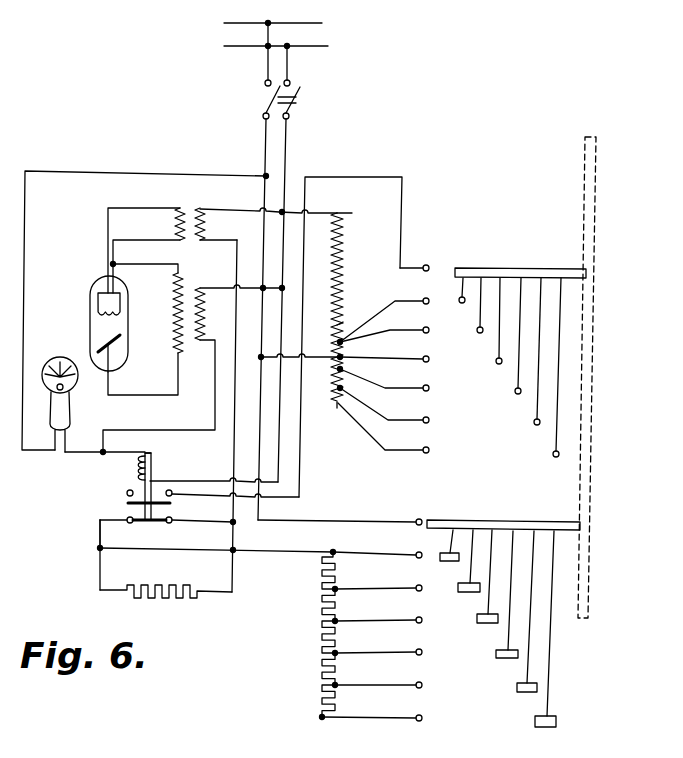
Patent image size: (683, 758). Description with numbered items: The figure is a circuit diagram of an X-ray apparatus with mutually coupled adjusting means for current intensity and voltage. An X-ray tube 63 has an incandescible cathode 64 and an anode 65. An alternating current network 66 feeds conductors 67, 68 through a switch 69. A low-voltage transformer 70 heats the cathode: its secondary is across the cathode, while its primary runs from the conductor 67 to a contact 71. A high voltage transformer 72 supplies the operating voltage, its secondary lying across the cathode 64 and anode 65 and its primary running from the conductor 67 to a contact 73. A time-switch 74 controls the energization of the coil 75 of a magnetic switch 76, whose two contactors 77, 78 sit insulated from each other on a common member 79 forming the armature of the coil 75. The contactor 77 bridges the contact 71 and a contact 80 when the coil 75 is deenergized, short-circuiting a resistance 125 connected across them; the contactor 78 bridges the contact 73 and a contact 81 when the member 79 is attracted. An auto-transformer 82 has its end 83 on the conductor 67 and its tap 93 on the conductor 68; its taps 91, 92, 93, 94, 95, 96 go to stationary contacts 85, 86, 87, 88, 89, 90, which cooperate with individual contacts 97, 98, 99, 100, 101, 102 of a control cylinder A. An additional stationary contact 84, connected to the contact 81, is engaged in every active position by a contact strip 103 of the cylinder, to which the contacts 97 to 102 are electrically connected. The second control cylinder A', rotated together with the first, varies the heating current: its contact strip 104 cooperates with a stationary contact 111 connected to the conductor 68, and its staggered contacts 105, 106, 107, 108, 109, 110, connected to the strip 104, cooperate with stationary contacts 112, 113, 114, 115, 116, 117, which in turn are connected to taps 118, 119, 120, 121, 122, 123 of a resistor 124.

The X-ray tube 63 is at (90, 322).
The incandescible cathode 64 is at (105, 312).
The anode 65 is at (99, 342).
The alternating current network 66 is at (280, 34).
The conductor 67 is at (286, 135).
The conductor 68 is at (266, 137).
The switch 69 is at (297, 100).
The low-voltage transformer 70 is at (190, 222).
The contact 71 is at (172, 522).
The high voltage transformer 72 is at (177, 346).
The contact 73 is at (128, 503).
The time-switch 74 is at (58, 412).
The coil 75 is at (152, 472).
The magnetic switch 76 is at (127, 492).
The contactor 77 is at (150, 522).
The contactor 78 is at (127, 520).
The common member 79 is at (148, 456).
The contact 80 is at (102, 524).
The contact 81 is at (172, 495).
The auto-transformer 82 is at (343, 306).
The end of auto-transformer 83 is at (358, 213).
The stationary contact 84 is at (425, 266).
The stationary contact 85 is at (384, 311).
The stationary contact 86 is at (384, 325).
The stationary contact 87 is at (384, 350).
The stationary contact 88 is at (384, 379).
The stationary contact 89 is at (384, 405).
The stationary contact 90 is at (383, 428).
The tap 91 is at (343, 327).
The tap 92 is at (345, 342).
The tap 93 is at (345, 357).
The tap 94 is at (345, 368).
The tap 95 is at (343, 386).
The tap 96 is at (337, 405).
The contact of cylinder A 97 is at (460, 298).
The contact of cylinder A 98 is at (477, 330).
The contact of cylinder A 99 is at (496, 361).
The contact of cylinder A 100 is at (515, 391).
The contact of cylinder A 101 is at (534, 422).
The contact of cylinder A 102 is at (553, 454).
The contact strip 103 is at (588, 272).
The contact strip 104 is at (582, 526).
The staggered contact 105 is at (450, 562).
The staggered contact 106 is at (468, 593).
The staggered contact 107 is at (487, 624).
The staggered contact 108 is at (507, 659).
The staggered contact 109 is at (527, 693).
The staggered contact 110 is at (545, 728).
The stationary contact 111 is at (417, 525).
The stationary contact 112 is at (417, 558).
The stationary contact 113 is at (417, 591).
The stationary contact 114 is at (417, 623).
The stationary contact 115 is at (417, 655).
The stationary contact 116 is at (417, 688).
The stationary contact 117 is at (417, 721).
The tap 118 is at (333, 552).
The tap 119 is at (337, 588).
The tap 120 is at (337, 620).
The tap 121 is at (337, 653).
The tap 122 is at (337, 685).
The tap 123 is at (326, 717).
The resistor 124 is at (323, 654).
The resistance 125 is at (170, 600).